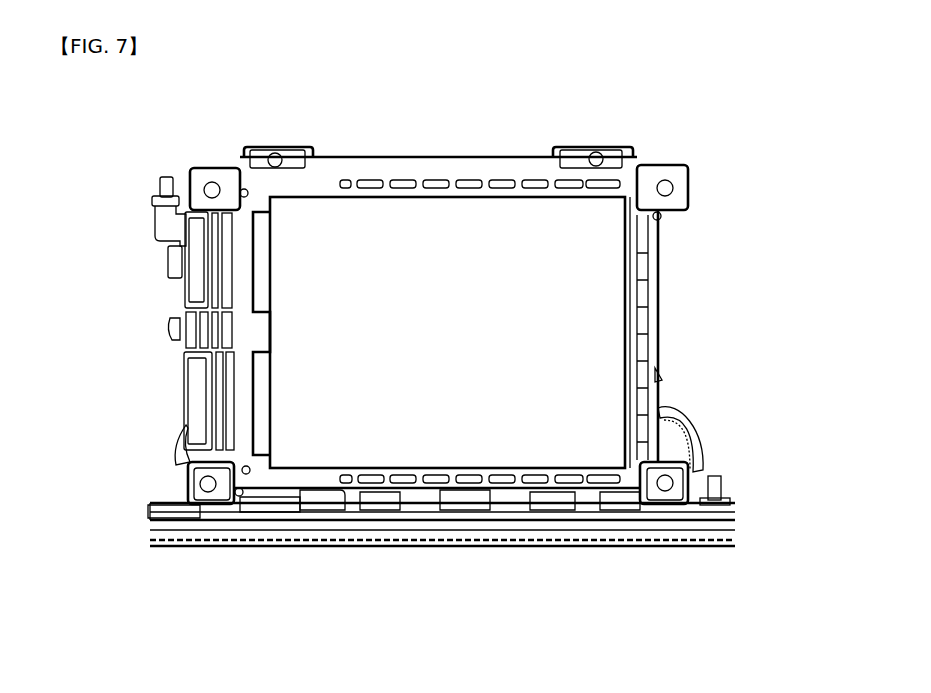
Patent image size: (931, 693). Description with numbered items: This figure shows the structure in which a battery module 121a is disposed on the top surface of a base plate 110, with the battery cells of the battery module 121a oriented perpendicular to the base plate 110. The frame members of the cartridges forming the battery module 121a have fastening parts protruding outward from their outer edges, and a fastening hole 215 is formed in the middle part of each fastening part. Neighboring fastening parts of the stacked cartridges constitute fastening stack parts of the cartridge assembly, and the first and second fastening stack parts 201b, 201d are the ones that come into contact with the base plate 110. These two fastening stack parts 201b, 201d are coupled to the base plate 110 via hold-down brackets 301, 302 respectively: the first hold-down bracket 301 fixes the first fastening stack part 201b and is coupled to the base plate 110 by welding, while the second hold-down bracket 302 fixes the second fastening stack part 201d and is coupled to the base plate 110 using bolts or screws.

The battery module 121a is at (207, 160).
The fastening hole 215 is at (188, 455).
The first fastening stack part 201b is at (203, 483).
The second fastening stack part 201d is at (676, 481).
The second hold-down bracket 302 is at (720, 486).
The first hold-down bracket 301 is at (175, 500).
The base plate 110 is at (132, 540).